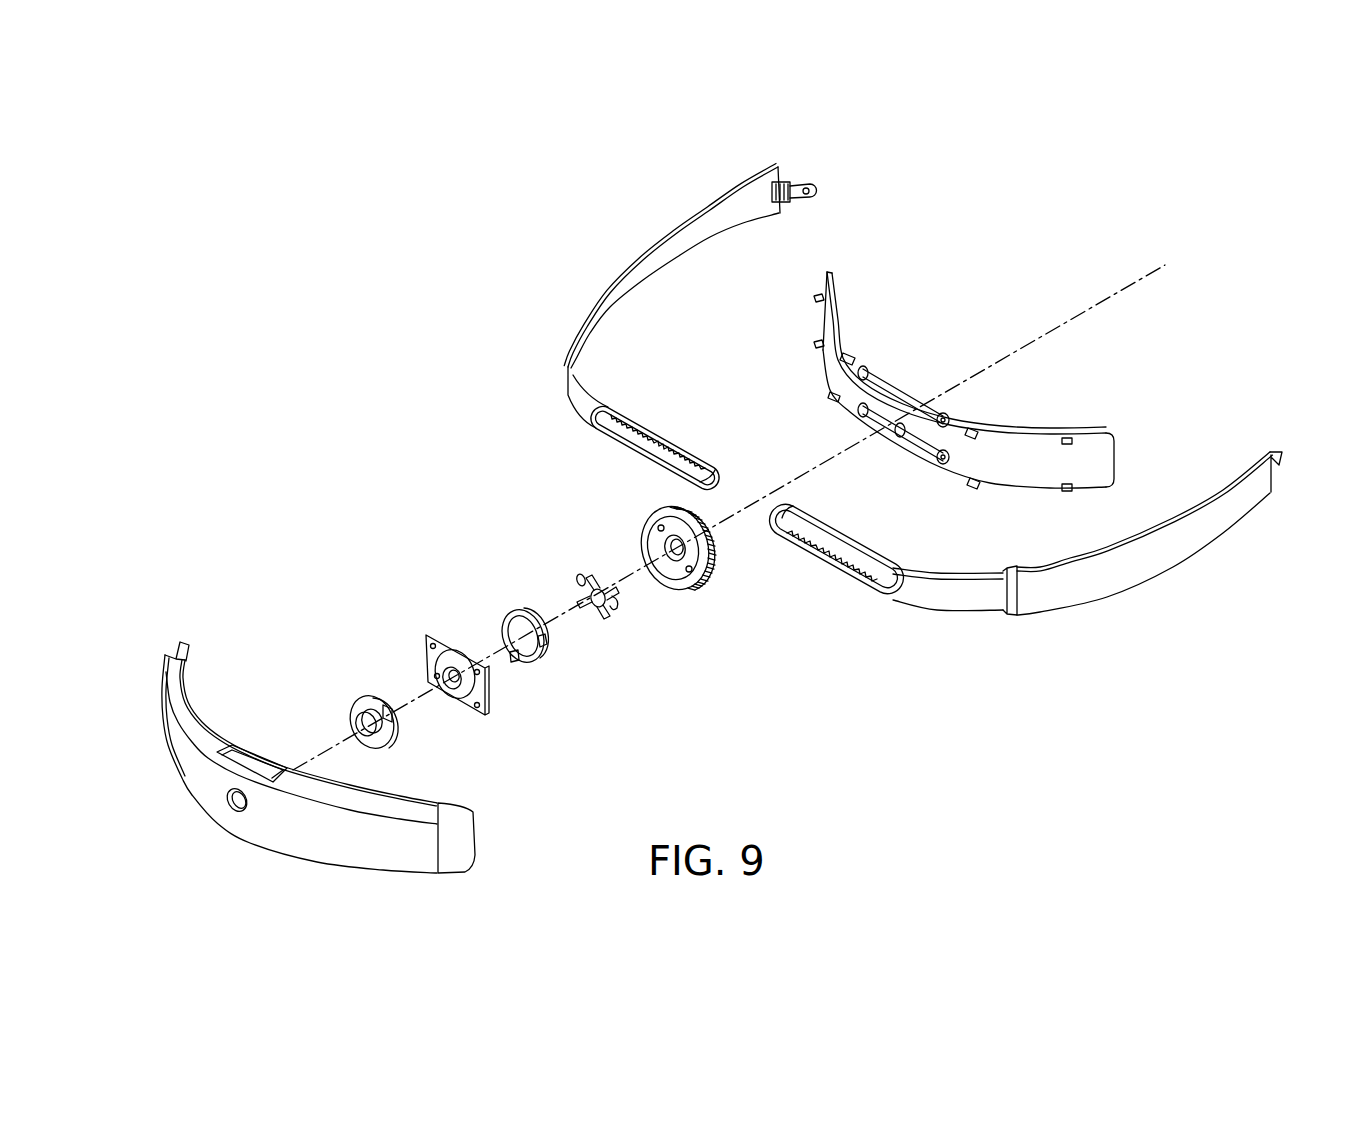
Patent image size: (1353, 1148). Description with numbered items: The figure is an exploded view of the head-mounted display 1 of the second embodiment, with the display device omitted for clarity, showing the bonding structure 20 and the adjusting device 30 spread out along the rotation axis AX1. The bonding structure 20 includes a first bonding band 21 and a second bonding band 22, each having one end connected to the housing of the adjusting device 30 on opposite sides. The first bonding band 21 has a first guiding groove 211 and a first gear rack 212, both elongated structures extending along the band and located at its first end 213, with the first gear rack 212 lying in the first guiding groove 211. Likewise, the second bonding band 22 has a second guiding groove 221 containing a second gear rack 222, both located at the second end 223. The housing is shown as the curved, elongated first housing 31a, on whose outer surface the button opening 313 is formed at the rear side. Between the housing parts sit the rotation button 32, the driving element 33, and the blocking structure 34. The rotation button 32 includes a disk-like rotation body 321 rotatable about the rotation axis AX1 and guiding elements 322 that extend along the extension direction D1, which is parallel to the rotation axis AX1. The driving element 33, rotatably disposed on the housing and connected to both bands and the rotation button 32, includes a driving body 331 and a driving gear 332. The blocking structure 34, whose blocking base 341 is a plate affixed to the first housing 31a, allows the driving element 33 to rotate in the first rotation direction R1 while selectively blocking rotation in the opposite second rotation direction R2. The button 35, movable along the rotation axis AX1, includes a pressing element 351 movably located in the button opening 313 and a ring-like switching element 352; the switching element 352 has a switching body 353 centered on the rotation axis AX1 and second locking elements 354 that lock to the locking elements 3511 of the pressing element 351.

The head-mounted display 1 is at (1210, 153).
The bonding structure 20 is at (904, 382).
The first bonding band 21 is at (672, 327).
The first guiding groove 211 is at (607, 419).
The first gear rack 212 is at (652, 437).
The first end 213 is at (701, 458).
The second bonding band 22 is at (1026, 550).
The second guiding groove 221 is at (928, 534).
The second gear rack 222 is at (863, 572).
The second end 223 is at (813, 528).
The adjusting device 30 is at (236, 152).
The first housing 31a is at (291, 733).
The button opening 313 is at (297, 767).
The rotation button 32 is at (717, 591).
The rotation body 321 is at (710, 570).
The guiding element 322 is at (703, 581).
The driving element 33 is at (602, 593).
The driving body 331 is at (600, 616).
The driving gear 332 is at (617, 605).
The blocking structure 34 is at (430, 637).
The blocking base 341 is at (441, 636).
The button 35 is at (236, 240).
The pressing element 351 is at (402, 695).
The locking element 3511 is at (393, 720).
The switching element 352 is at (527, 642).
The switching body 353 is at (536, 655).
The second locking element 354 is at (530, 662).
The rotation axis AX1 is at (1022, 340).
The first rotation direction R1 is at (1118, 332).
The second rotation direction R2 is at (1092, 354).
The extension direction D1 is at (1152, 358).